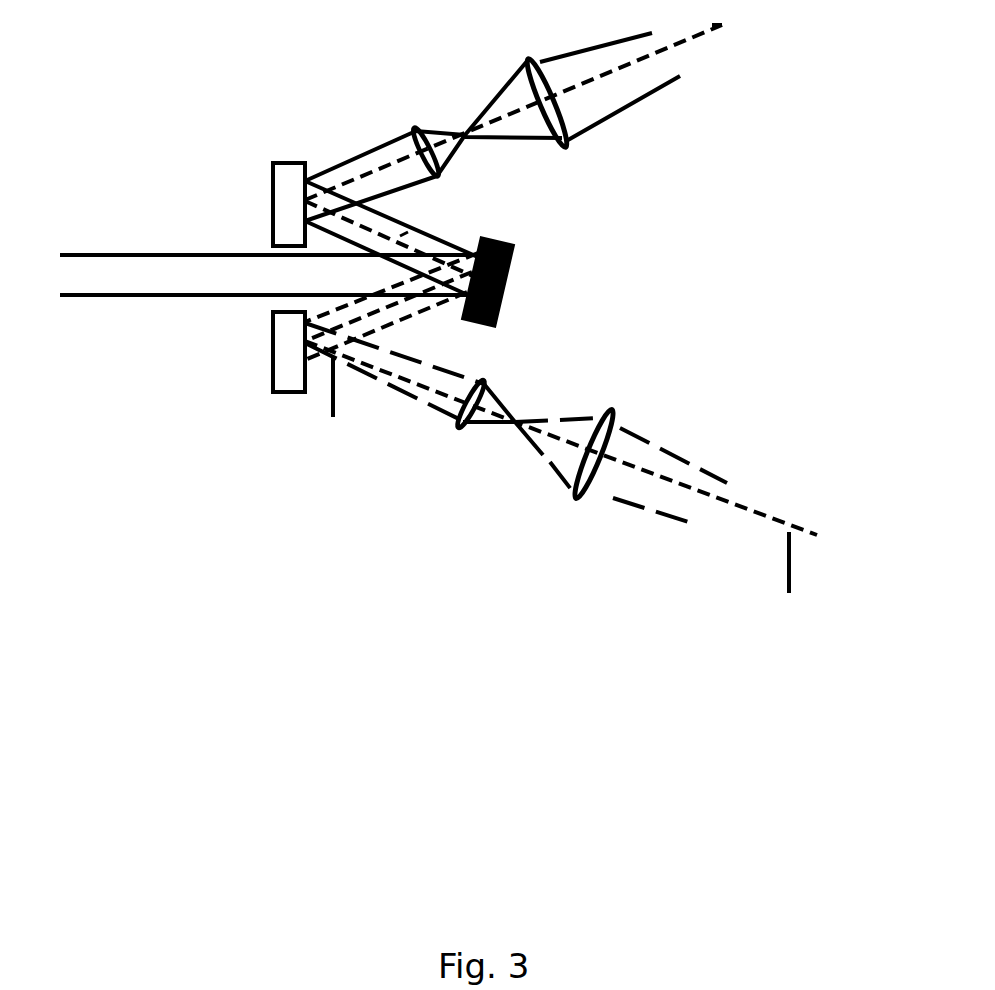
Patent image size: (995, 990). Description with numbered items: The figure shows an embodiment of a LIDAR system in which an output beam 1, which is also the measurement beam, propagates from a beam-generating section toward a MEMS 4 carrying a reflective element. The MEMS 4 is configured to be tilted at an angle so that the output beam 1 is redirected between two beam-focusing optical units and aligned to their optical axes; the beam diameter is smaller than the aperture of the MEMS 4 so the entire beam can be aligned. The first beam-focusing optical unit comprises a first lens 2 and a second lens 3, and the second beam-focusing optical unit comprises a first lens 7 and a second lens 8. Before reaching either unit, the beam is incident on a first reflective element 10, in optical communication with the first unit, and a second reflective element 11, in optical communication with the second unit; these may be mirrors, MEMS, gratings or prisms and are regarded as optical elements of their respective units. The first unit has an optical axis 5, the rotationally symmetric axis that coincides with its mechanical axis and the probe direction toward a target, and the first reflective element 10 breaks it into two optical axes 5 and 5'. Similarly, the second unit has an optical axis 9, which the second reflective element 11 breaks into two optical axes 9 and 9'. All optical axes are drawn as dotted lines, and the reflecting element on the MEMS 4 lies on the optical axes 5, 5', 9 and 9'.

The output beam 1 is at (158, 275).
The first lens 2 is at (413, 140).
The second lens 3 is at (572, 140).
The MEMS 4 is at (507, 285).
The optical axis 5 is at (775, 55).
The optical axis 5' is at (469, 196).
The first lens 7 is at (460, 423).
The second lens 8 is at (567, 485).
The optical axis 9 is at (814, 575).
The optical axis 9' is at (362, 401).
The first reflective element 10 is at (272, 175).
The second reflective element 11 is at (273, 355).